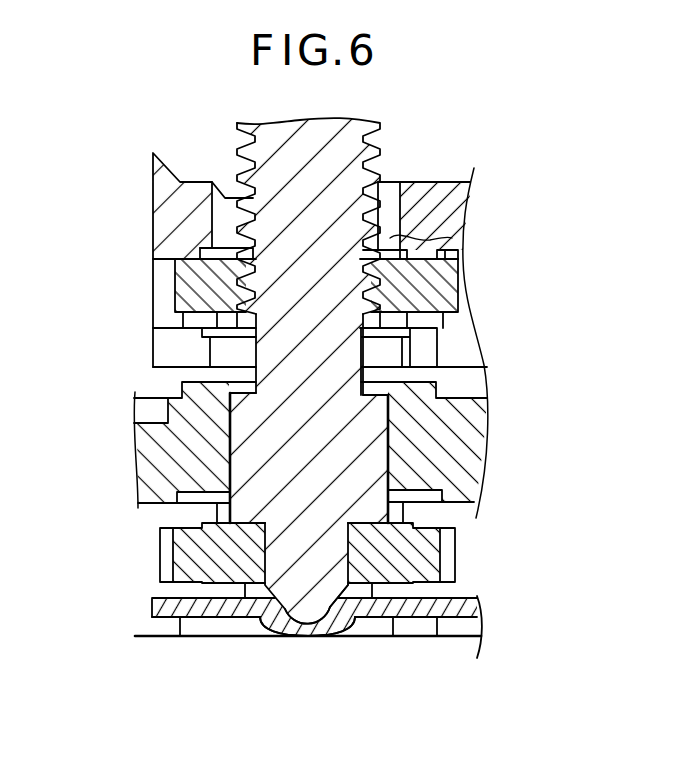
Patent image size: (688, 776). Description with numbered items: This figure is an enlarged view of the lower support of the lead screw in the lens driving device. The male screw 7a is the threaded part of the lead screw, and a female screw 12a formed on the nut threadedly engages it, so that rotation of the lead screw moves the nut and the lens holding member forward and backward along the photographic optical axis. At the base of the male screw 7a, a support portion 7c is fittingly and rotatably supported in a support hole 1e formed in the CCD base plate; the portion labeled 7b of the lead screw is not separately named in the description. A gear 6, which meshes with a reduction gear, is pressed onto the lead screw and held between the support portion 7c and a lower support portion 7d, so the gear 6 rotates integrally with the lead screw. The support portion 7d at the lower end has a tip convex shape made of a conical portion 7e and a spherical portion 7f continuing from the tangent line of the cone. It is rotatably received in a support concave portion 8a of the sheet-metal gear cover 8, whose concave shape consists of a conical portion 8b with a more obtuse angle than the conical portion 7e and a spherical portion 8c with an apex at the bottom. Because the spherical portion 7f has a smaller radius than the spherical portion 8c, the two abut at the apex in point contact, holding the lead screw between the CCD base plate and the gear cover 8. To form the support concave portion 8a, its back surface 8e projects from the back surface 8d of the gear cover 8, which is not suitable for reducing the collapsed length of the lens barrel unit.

The male screw 7a is at (379, 149).
The shaft portion of bolt 7b is at (341, 358).
The support portion 7c is at (379, 457).
The support portion 7d is at (455, 693).
The conical portion 7e is at (324, 589).
The spherical portion 7f is at (310, 608).
The female screw 12a is at (236, 278).
The support hole 1e is at (230, 449).
The gear 6 is at (449, 557).
The gear cover 8 is at (152, 608).
The support concave portion 8a is at (279, 693).
The conical portion 8b is at (260, 618).
The spherical portion 8c is at (283, 623).
The back surface 8d is at (256, 632).
The back surface 8e is at (307, 614).